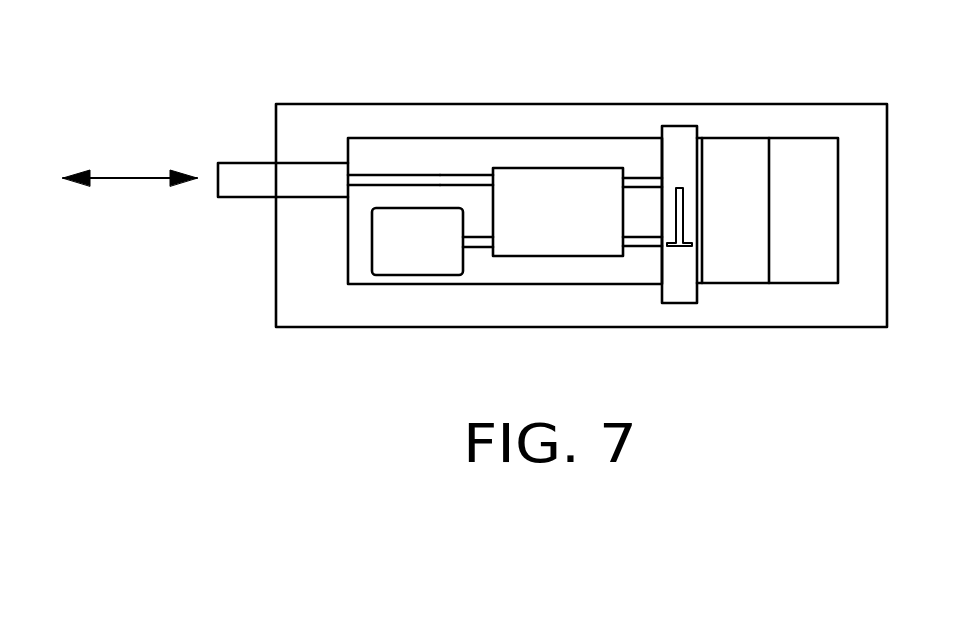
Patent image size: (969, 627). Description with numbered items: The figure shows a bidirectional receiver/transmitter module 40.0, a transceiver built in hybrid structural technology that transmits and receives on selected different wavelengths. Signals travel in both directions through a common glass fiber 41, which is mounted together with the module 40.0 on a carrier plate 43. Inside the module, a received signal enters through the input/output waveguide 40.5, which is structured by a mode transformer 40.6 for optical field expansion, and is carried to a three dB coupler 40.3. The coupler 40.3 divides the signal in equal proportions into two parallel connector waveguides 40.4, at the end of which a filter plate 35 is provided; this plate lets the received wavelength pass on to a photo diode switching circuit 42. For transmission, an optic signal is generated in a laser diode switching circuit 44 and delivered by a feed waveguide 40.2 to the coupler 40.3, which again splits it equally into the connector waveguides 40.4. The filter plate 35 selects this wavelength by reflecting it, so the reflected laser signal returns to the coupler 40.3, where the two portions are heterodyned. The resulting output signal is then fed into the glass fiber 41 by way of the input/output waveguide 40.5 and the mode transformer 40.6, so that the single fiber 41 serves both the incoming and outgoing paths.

The glass fiber 41 is at (240, 177).
The carrier plate 43 is at (285, 104).
The bidirectional receiver/transmitter module 40.0 is at (368, 138).
The mode transformer 40.6 is at (375, 175).
The input/output waveguide 40.5 is at (477, 172).
The 3 dB coupler 40.3 is at (548, 256).
The feed waveguide 40.2 is at (475, 247).
The laser diode switching circuit 44 is at (409, 251).
The connector waveguides 40.4 is at (648, 190).
The filter plate 35 is at (679, 138).
The photo diode switching circuit 42 is at (767, 138).